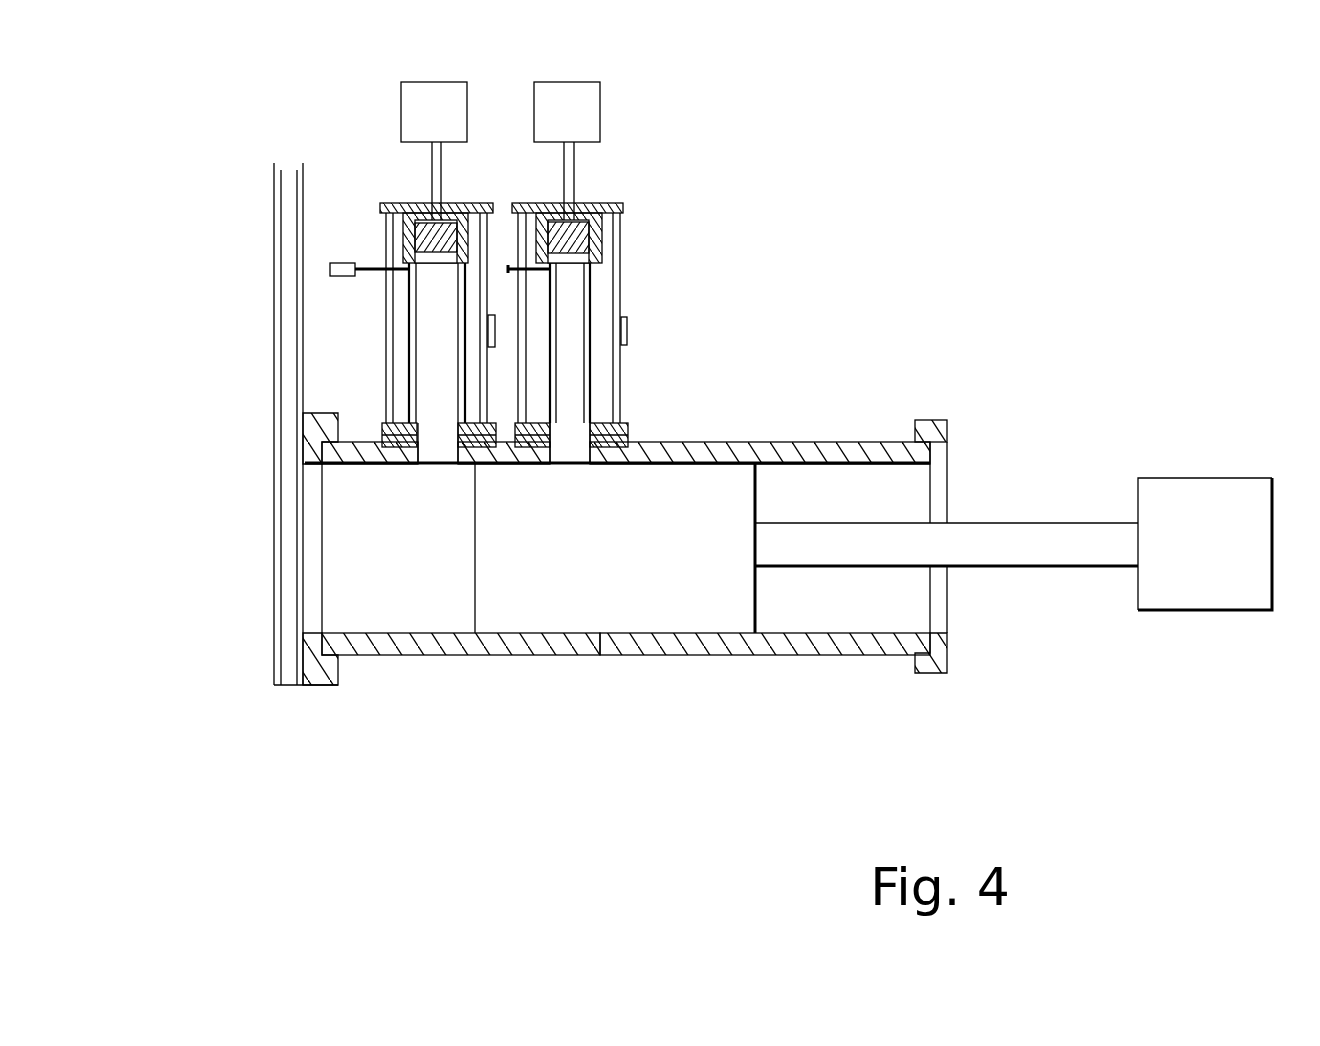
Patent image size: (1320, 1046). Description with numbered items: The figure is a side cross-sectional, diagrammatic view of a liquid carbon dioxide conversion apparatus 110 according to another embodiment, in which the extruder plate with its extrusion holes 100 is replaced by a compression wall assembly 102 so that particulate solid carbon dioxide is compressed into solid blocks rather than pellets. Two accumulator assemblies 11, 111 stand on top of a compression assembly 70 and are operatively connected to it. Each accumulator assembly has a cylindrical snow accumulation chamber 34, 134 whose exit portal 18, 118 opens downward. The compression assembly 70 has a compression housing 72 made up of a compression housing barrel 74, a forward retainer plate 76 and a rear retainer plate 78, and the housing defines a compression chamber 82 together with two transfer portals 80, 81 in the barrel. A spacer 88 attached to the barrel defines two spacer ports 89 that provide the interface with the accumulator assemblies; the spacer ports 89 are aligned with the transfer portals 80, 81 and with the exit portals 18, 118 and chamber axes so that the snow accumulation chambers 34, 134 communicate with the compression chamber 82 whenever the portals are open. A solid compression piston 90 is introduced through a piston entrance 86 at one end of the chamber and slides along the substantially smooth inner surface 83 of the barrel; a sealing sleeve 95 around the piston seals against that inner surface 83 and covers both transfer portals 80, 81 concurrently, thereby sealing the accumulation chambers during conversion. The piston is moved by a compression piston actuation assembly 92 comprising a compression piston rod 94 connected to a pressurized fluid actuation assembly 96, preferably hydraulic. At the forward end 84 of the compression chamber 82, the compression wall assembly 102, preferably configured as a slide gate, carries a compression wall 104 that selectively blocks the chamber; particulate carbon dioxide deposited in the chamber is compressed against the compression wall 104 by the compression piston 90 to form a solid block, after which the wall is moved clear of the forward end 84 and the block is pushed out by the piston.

The accumulator assembly 11 is at (637, 193).
The exit portal 18 is at (571, 426).
The snow accumulation chamber 34 is at (583, 305).
The compression assembly 70 is at (899, 370).
The compression housing 72 is at (558, 645).
The compression housing barrel 74 is at (660, 657).
The forward retainer plate 76 is at (307, 686).
The rear retainer plate 78 is at (950, 672).
The transfer portal 80 is at (578, 468).
The transfer portal 81 is at (437, 464).
The compression chamber 82 is at (397, 582).
The inner surface 83 is at (838, 480).
The forward end 84 is at (323, 585).
The piston entrance 86 is at (926, 598).
The spacer 88 is at (628, 440).
The spacer port 89 is at (422, 424).
The compression piston 90 is at (523, 608).
The compression piston actuation assembly 92 is at (1131, 661).
The compression piston rod 94 is at (1053, 537).
The sealing sleeve 95 is at (828, 476).
The pressurized fluid actuation assembly 96 is at (1184, 520).
The extrusion holes 100 is at (290, 515).
The compression wall assembly 102 is at (255, 715).
The compression wall 104 is at (290, 643).
The liquid carbon dioxide conversion apparatus 110 is at (1030, 226).
The accumulator assembly 111 is at (353, 187).
The exit portal 118 is at (445, 422).
The snow accumulation chamber 134 is at (430, 302).